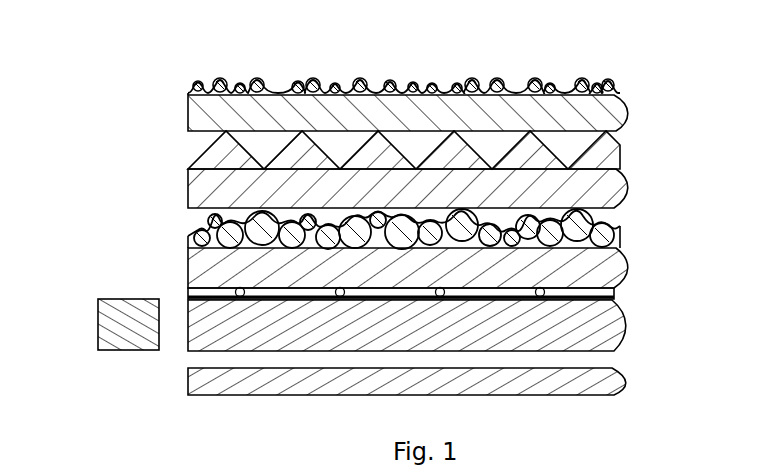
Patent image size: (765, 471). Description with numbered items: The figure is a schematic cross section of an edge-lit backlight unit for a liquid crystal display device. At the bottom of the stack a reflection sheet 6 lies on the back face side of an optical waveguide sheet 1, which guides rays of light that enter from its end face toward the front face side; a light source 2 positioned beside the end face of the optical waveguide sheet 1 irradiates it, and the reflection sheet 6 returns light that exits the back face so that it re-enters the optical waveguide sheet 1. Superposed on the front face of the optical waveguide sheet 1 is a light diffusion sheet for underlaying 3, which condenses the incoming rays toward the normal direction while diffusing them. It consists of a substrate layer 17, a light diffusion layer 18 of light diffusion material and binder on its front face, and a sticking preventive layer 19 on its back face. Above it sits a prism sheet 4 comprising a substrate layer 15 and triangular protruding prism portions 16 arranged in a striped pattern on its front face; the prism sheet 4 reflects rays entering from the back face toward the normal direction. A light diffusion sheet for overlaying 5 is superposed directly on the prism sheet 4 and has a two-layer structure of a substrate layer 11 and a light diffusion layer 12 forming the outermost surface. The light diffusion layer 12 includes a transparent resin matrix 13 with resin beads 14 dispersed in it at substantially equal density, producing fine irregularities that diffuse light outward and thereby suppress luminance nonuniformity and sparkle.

The optical waveguide sheet 1 is at (600, 320).
The light source 2 is at (112, 325).
The light diffusion sheet for underlaying 3 is at (407, 247).
The prism sheet 4 is at (407, 169).
The light diffusion sheet for overlaying 5 is at (407, 72).
The reflection sheet 6 is at (600, 380).
The substrate layer 11 is at (195, 117).
The light diffusion layer 12 is at (381, 54).
The resin matrix 13 is at (271, 90).
The resin beads 14 is at (352, 80).
The substrate layer 15 is at (195, 190).
The protruding prism portion 16 is at (205, 162).
The substrate layer 17 is at (195, 258).
The light diffusion layer 18 is at (192, 218).
The sticking preventive layer 19 is at (190, 295).